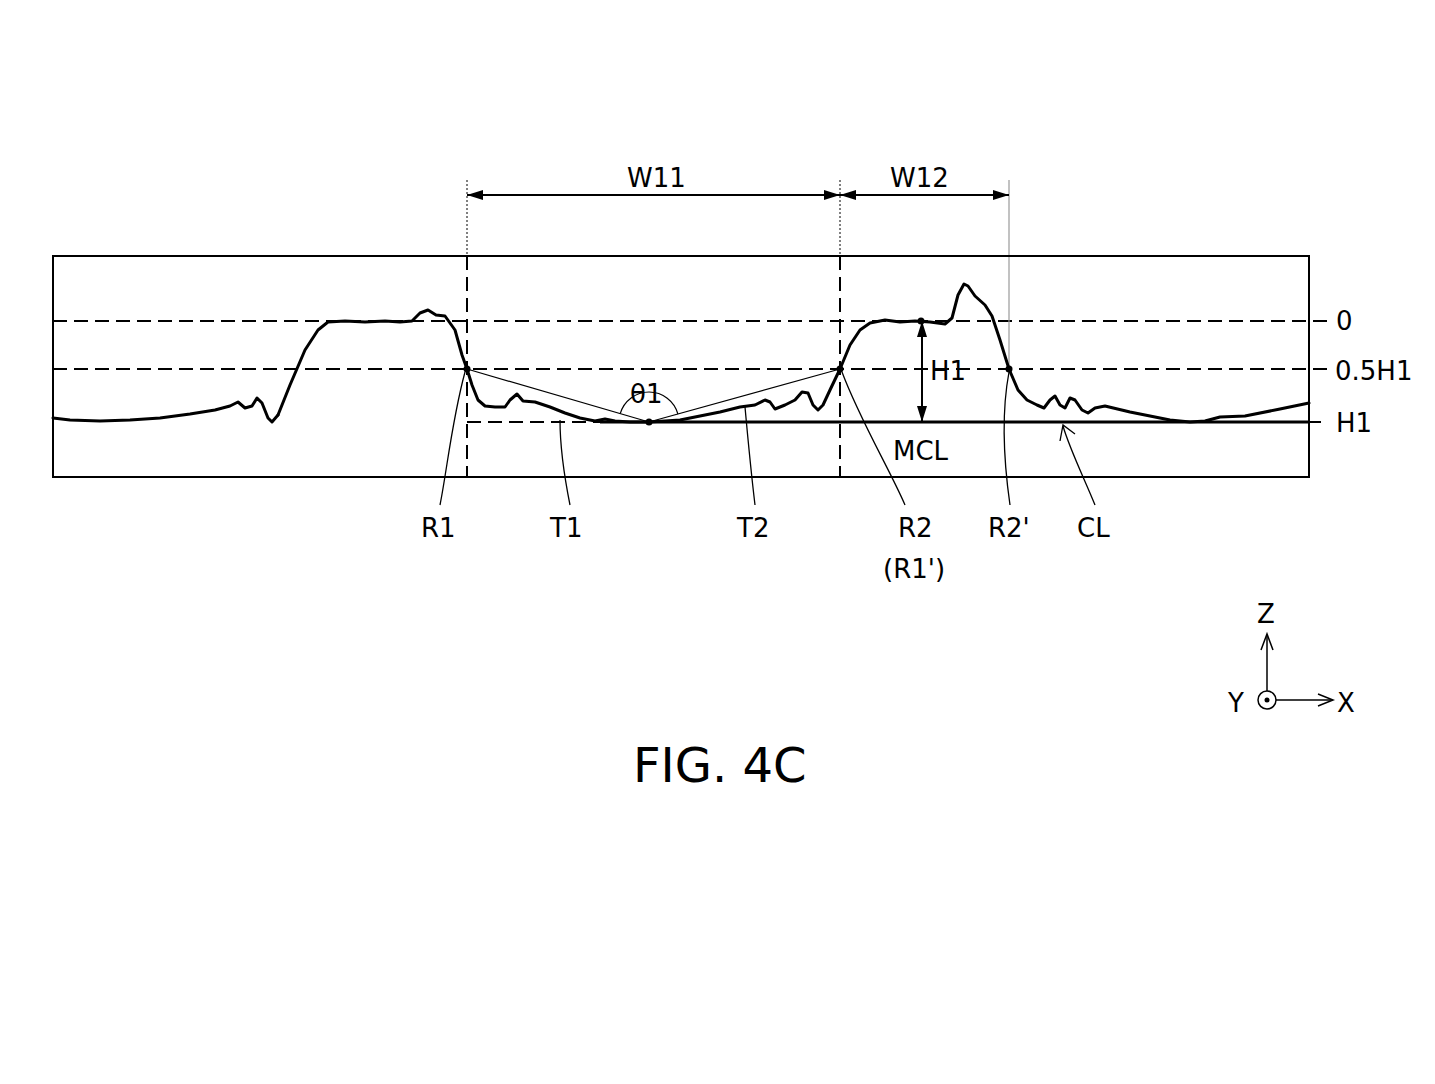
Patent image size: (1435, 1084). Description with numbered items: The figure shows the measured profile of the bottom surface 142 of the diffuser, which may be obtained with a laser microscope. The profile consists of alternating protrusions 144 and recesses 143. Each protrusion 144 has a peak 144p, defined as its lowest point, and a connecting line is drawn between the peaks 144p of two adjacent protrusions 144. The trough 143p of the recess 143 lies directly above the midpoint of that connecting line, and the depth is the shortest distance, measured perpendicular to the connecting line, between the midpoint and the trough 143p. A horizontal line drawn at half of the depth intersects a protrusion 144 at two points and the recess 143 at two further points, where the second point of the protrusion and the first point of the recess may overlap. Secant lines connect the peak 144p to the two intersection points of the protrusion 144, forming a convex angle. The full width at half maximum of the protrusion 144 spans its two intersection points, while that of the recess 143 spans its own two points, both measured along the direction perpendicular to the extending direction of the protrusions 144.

The bottom surface 142 is at (138, 182).
The recess 143 is at (375, 312).
The trough 143p is at (921, 321).
The protrusion 144 is at (818, 453).
The peak 144p is at (649, 424).